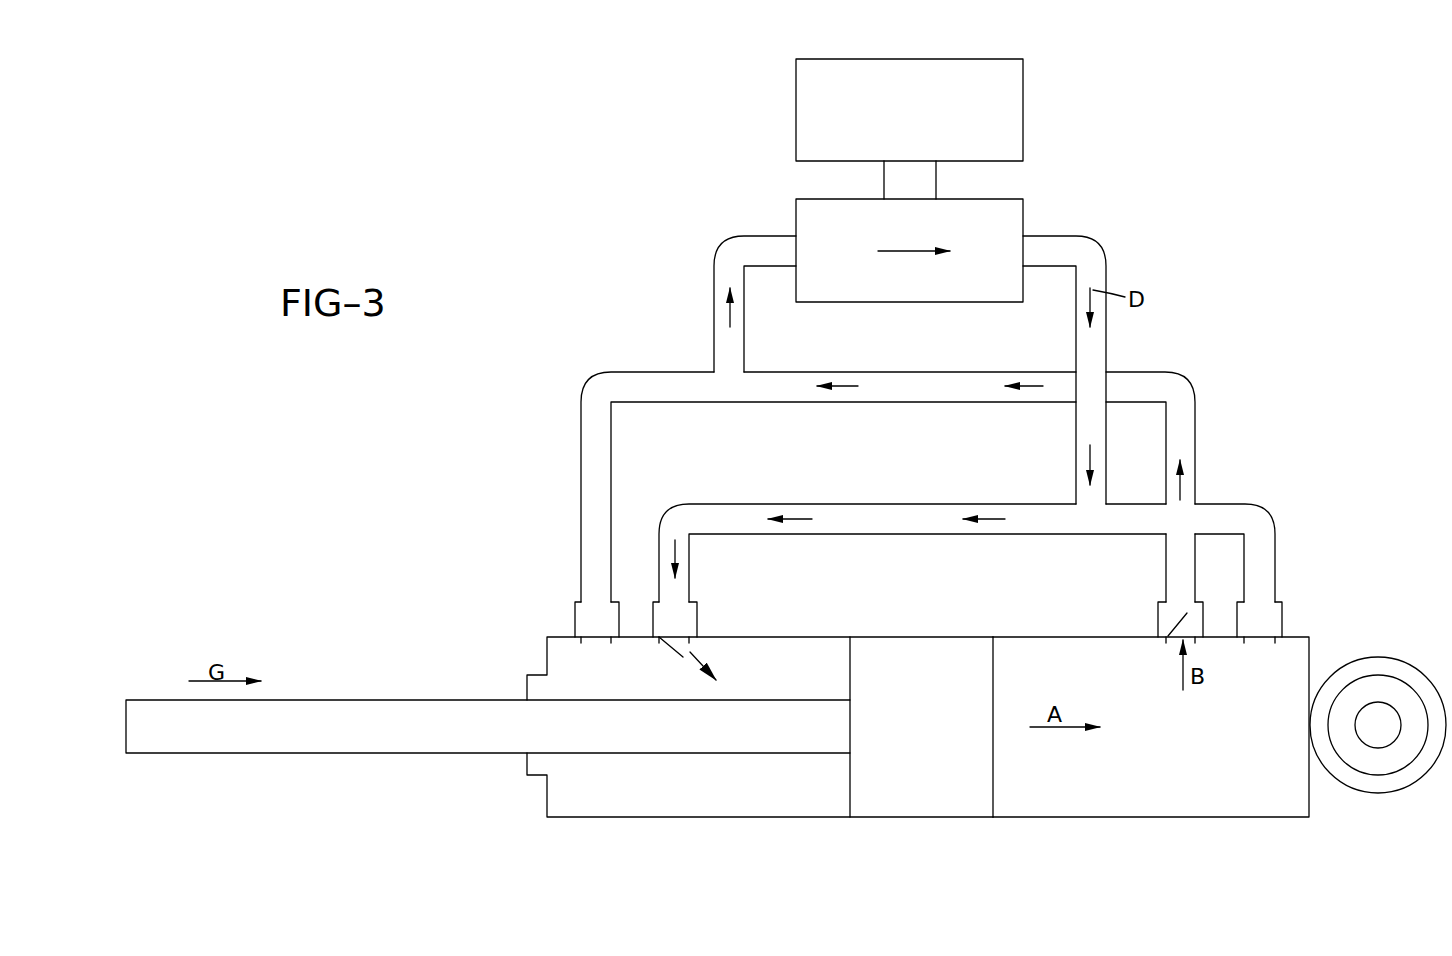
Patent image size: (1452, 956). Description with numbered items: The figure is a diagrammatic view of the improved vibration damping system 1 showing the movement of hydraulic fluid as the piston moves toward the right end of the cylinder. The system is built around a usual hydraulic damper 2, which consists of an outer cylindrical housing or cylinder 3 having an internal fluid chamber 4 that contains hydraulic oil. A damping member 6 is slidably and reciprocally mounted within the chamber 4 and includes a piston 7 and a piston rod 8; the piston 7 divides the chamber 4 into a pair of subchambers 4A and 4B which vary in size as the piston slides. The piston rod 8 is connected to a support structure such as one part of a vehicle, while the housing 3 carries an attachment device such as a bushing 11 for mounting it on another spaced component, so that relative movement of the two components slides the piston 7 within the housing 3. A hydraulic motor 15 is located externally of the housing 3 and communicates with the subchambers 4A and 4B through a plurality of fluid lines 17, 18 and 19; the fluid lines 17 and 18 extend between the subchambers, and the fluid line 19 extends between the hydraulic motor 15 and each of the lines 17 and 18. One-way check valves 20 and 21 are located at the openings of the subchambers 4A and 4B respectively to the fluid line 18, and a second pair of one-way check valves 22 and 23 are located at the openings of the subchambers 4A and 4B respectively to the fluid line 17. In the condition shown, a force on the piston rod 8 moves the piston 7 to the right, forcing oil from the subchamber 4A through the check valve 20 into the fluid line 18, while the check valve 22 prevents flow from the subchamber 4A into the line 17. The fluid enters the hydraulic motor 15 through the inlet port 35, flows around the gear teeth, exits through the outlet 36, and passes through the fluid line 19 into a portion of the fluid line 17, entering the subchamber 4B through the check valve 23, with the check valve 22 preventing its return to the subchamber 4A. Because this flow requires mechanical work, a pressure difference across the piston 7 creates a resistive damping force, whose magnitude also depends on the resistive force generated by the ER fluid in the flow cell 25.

The vibration damping system 1 is at (1262, 230).
The hydraulic damper 2 is at (618, 820).
The cylinder housing 3 is at (1140, 818).
The internal fluid chamber 4 is at (1097, 790).
The subchamber 4A is at (1230, 790).
The subchamber 4B is at (703, 788).
The damping member 6 is at (881, 810).
The piston 7 is at (913, 808).
The piston rod 8 is at (346, 740).
The bushing 11 is at (1380, 785).
The hydraulic motor 15 is at (1025, 208).
The fluid line 17 is at (883, 522).
The fluid line 18 is at (902, 392).
The fluid line 19 is at (1093, 258).
The one-way check valve 20 is at (1172, 640).
The one-way check valve 21 is at (597, 640).
The one-way check valve 22 is at (1260, 640).
The one-way check valve 23 is at (663, 640).
The flow cell 25 is at (1025, 88).
The inlet port 35 is at (796, 253).
The outlet 36 is at (1023, 253).